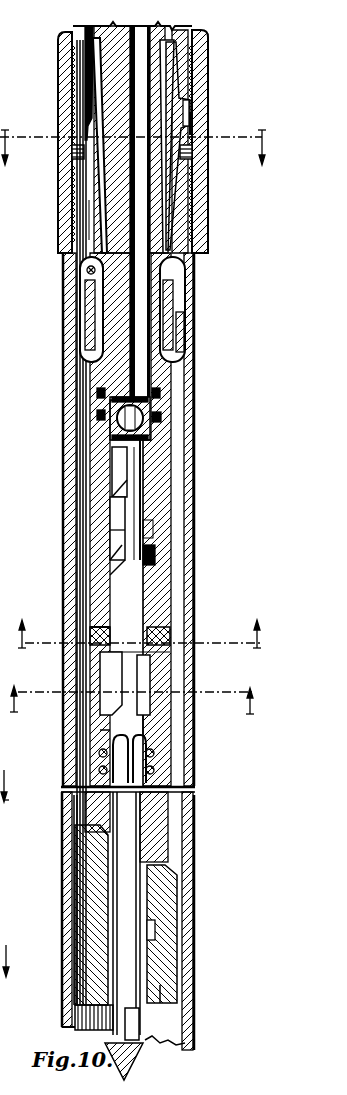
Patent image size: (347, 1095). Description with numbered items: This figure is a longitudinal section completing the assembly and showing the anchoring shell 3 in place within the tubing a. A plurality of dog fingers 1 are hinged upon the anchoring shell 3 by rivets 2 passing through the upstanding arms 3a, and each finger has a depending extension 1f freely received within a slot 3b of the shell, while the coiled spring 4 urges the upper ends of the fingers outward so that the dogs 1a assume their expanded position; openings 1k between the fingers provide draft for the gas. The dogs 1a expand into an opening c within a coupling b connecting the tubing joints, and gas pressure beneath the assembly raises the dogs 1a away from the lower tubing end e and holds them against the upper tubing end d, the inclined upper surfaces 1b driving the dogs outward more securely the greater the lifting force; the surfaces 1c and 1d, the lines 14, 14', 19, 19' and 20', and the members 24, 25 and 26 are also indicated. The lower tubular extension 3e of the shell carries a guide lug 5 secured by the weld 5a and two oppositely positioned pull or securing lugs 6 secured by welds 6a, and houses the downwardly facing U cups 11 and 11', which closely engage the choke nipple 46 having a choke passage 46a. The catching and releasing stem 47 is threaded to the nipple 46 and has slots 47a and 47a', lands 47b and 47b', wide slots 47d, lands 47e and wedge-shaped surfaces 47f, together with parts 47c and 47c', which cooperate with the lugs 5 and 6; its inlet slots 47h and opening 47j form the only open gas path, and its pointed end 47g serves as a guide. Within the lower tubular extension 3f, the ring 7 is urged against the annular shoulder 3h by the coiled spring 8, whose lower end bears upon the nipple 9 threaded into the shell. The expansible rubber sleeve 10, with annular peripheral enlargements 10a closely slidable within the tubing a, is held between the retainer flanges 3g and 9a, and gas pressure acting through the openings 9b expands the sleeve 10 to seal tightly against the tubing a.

The tubing a is at (200, 30).
The choke nipple 46 is at (120, 53).
The openings between the fingers 1k is at (183, 57).
The tapered wedge 1d is at (178, 78).
The coupling recess 1c is at (200, 108).
The upper tubing end d is at (205, 122).
The section line 14 is at (138, 160).
The section line 14' is at (15, 159).
The inclined upper surfaces of the dogs 1b is at (70, 153).
The dogs 1a is at (200, 148).
The opening within a coupling c is at (62, 165).
The lower joint of tubing end e is at (210, 171).
The coupling b is at (205, 197).
The choke passage 46a is at (135, 221).
The dog fingers 1 is at (170, 221).
The rivets 2 is at (195, 270).
The upstanding arms 3a is at (100, 283).
The depending extension 1f is at (180, 303).
The coiled spring 4 is at (182, 337).
The slots 3b is at (162, 522).
The anchoring shell 3 is at (168, 383).
The U cup packing 11 is at (162, 404).
The U cup packing 11' is at (164, 422).
The slots of the stem 47a is at (131, 498).
The lands 47b is at (78, 476).
The lower tubular extension 3e is at (165, 452).
The plunger body 47c is at (75, 519).
The catching and releasing stem 47 is at (145, 505).
The plunger body 47c' is at (75, 535).
The weld 5a is at (170, 530).
The lands 47b' is at (74, 541).
The guide lug 5 is at (186, 559).
The slots of the stem 47a' is at (74, 571).
The section line 19 is at (147, 625).
The section line 19' is at (28, 623).
The pull or securing lugs 6 is at (90, 633).
The welds 6a is at (168, 631).
The annular shoulder 3h is at (170, 653).
The slots 47d is at (95, 684).
The lands 47e is at (140, 686).
The wedge-shaped surfaces 47f is at (155, 712).
The section line 20 20' is at (135, 717).
The ring 7 is at (165, 737).
The lower tubular extension 3f is at (92, 744).
The section line 24 is at (8, 776).
The coiled spring 8 is at (160, 776).
The member 25 is at (8, 842).
The retainer flange 3g is at (175, 867).
The expansible rubber sleeve 10 is at (78, 909).
The nipple 9 is at (160, 893).
The openings 9b is at (160, 930).
The annular peripheral enlargements 10a is at (75, 947).
The opening 47j is at (125, 974).
The section line 26 is at (8, 970).
The retainer flange 9a is at (175, 986).
The inlet slots 47h is at (145, 1020).
The pointed end 47g is at (135, 1070).